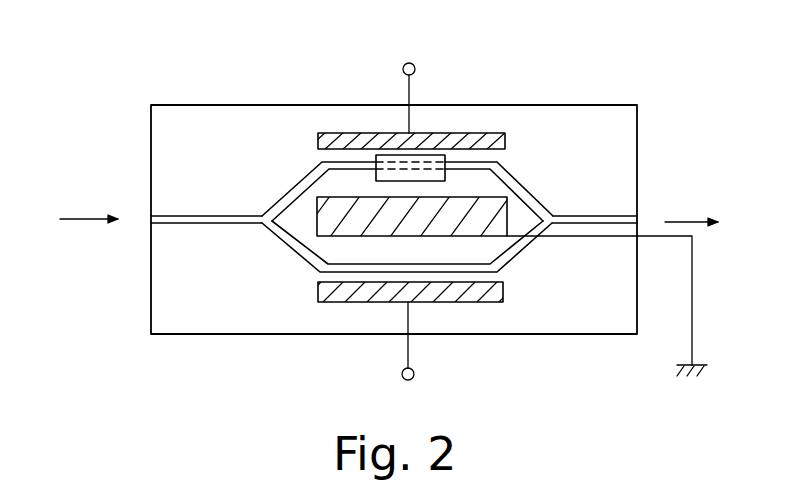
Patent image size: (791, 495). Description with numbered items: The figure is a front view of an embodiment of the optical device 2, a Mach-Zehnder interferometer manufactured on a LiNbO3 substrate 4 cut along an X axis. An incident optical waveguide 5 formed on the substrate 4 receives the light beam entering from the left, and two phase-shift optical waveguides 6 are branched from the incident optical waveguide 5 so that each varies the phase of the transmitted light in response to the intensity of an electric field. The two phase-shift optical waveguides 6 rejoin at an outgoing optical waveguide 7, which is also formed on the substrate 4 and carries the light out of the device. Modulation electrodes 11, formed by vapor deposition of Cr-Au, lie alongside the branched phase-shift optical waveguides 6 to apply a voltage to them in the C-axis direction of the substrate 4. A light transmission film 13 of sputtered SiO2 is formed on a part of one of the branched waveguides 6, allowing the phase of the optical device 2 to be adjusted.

The optical device 2 is at (627, 95).
The substrate 4 is at (637, 147).
The incident optical waveguide 5 is at (198, 214).
The phase-shift optical waveguides 6 is at (520, 187).
The outgoing optical waveguide 7 is at (596, 214).
The modulation electrodes 11 is at (318, 138).
The light transmission film 13 is at (447, 153).